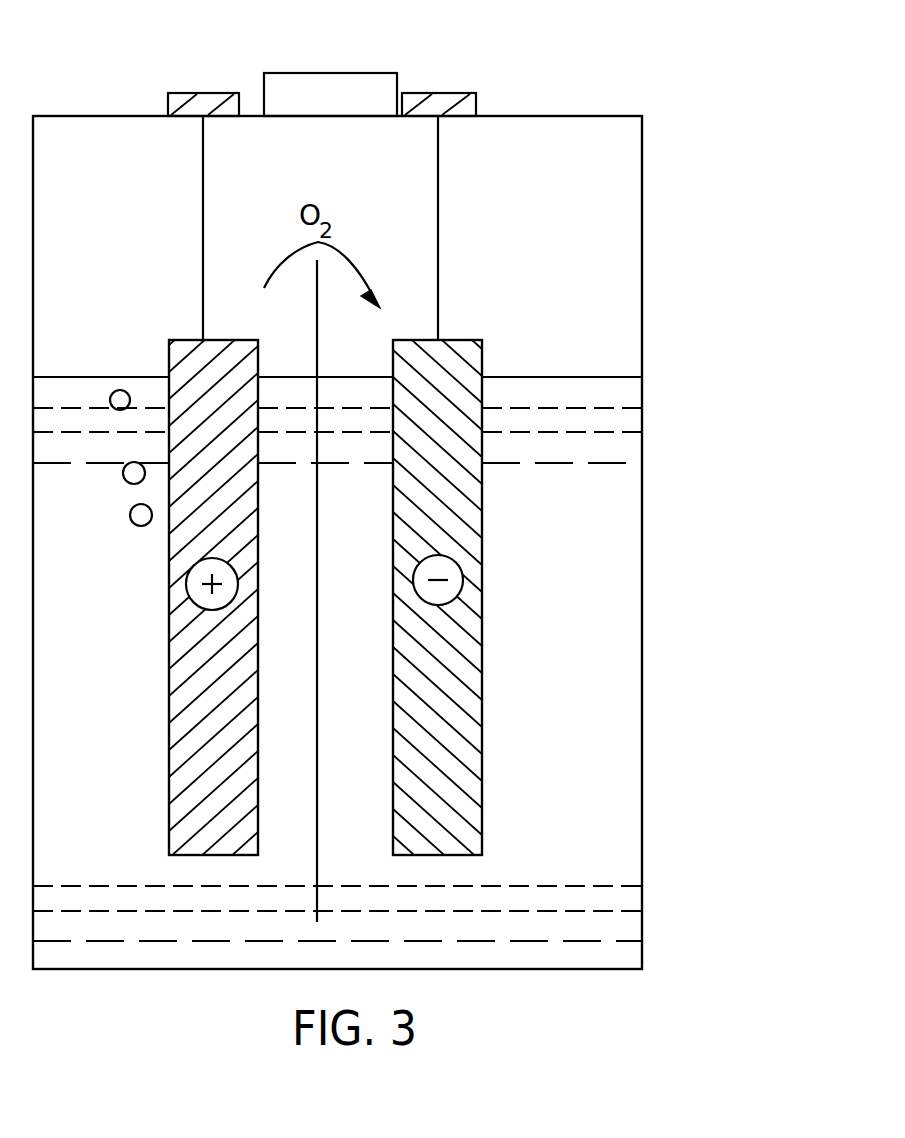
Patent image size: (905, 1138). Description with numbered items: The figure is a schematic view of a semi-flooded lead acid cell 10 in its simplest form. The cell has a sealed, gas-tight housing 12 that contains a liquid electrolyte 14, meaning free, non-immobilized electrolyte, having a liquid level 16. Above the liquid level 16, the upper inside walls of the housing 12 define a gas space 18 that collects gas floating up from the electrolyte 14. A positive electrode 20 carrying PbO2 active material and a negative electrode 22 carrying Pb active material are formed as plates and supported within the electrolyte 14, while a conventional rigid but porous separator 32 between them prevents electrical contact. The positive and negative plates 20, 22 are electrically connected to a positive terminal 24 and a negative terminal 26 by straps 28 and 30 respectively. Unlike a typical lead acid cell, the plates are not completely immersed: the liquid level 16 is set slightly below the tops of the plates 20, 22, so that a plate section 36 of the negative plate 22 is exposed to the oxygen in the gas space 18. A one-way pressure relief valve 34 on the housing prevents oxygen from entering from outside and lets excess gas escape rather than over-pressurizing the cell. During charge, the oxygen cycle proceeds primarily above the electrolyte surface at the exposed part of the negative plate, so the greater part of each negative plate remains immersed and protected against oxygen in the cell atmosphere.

The semi-flooded cell 10 is at (644, 758).
The sealed housing 12 is at (642, 546).
The liquid electrolyte 14 is at (597, 483).
The liquid level 16 is at (605, 377).
The gas space 18 is at (625, 213).
The positive electrode 20 is at (168, 808).
The negative electrode 22 is at (483, 810).
The positive terminal 24 is at (167, 103).
The negative terminal 26 is at (477, 102).
The strap 28 is at (203, 213).
The strap 30 is at (438, 262).
The separator 32 is at (317, 877).
The one-way pressure relief valve 34 is at (300, 72).
The plate section 36 is at (483, 363).